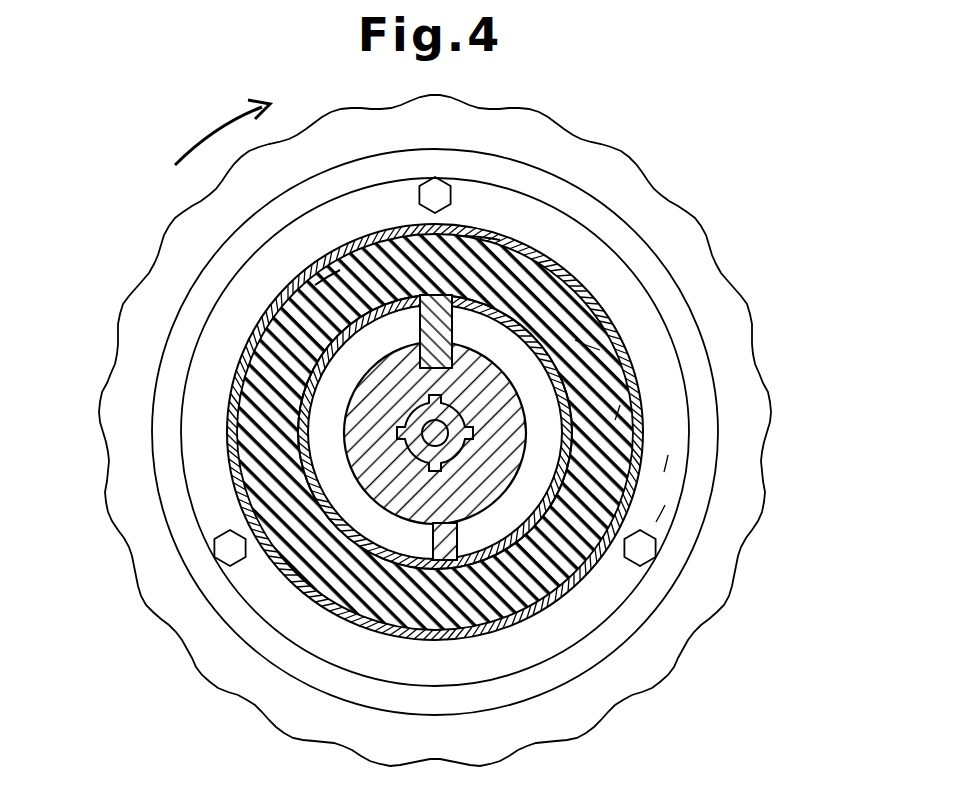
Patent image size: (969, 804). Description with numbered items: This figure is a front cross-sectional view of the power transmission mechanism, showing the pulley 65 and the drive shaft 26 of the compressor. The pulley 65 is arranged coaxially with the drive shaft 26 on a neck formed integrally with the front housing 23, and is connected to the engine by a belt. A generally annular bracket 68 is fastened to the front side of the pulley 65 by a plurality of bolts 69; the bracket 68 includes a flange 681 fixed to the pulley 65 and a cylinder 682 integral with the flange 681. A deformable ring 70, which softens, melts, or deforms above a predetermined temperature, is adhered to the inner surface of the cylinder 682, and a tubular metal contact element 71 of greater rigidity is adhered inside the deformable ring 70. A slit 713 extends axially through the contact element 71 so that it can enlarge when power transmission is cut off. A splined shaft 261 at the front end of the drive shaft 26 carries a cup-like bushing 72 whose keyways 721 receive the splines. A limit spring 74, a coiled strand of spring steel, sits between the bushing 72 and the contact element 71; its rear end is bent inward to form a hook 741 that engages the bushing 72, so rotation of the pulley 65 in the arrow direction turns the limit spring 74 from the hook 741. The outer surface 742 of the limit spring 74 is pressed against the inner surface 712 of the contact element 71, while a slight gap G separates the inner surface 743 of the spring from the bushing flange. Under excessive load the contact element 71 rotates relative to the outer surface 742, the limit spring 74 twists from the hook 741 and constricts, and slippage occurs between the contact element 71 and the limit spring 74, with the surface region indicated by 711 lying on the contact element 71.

The front housing 23 is at (718, 588).
The drive shaft 26 is at (300, 455).
The splined shaft 261 is at (415, 595).
The pulley 65 is at (735, 395).
The bracket 68 is at (668, 352).
The flange 681 is at (668, 455).
The cylinder 682 is at (665, 505).
The bolts 69 is at (452, 190).
The deformable ring 70 is at (570, 318).
The contact element 71 is at (300, 355).
The outer ring portion 711 is at (520, 262).
The inner surface 712 is at (330, 290).
The slit 713 is at (465, 238).
The bushing 72 is at (440, 595).
The keyways 721 is at (335, 560).
The limit spring 74 is at (330, 410).
The hook 741 is at (420, 300).
The outer surface 742 is at (600, 350).
The inner surface 743 is at (620, 405).
The gap G is at (585, 432).